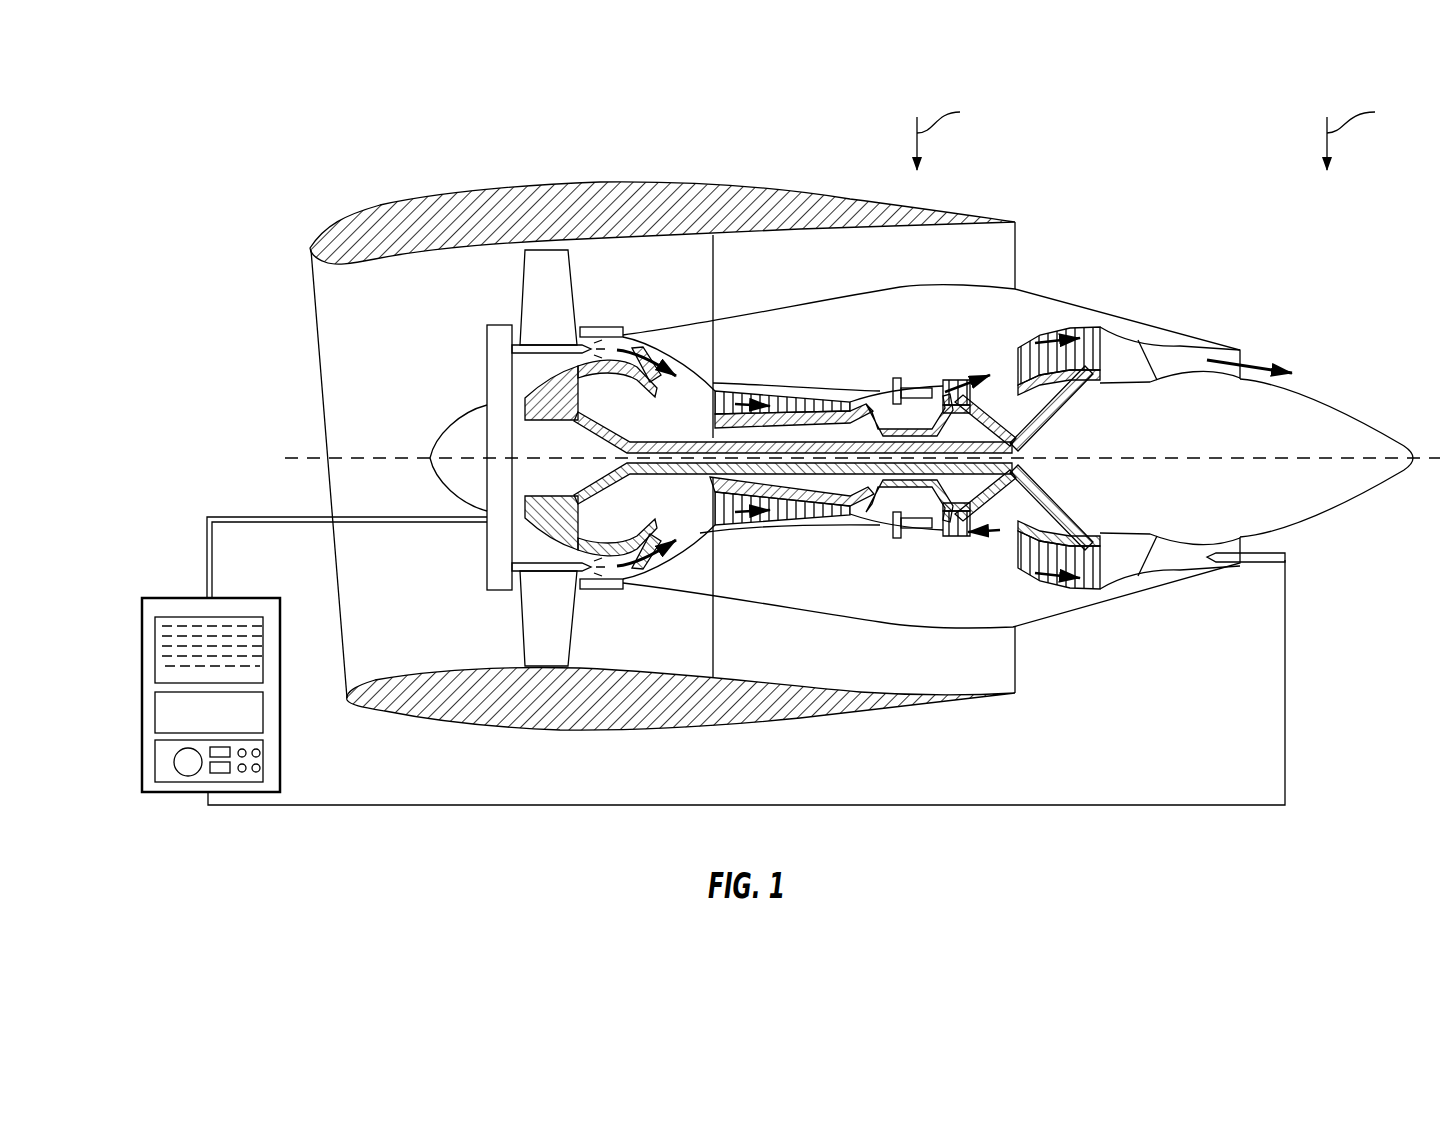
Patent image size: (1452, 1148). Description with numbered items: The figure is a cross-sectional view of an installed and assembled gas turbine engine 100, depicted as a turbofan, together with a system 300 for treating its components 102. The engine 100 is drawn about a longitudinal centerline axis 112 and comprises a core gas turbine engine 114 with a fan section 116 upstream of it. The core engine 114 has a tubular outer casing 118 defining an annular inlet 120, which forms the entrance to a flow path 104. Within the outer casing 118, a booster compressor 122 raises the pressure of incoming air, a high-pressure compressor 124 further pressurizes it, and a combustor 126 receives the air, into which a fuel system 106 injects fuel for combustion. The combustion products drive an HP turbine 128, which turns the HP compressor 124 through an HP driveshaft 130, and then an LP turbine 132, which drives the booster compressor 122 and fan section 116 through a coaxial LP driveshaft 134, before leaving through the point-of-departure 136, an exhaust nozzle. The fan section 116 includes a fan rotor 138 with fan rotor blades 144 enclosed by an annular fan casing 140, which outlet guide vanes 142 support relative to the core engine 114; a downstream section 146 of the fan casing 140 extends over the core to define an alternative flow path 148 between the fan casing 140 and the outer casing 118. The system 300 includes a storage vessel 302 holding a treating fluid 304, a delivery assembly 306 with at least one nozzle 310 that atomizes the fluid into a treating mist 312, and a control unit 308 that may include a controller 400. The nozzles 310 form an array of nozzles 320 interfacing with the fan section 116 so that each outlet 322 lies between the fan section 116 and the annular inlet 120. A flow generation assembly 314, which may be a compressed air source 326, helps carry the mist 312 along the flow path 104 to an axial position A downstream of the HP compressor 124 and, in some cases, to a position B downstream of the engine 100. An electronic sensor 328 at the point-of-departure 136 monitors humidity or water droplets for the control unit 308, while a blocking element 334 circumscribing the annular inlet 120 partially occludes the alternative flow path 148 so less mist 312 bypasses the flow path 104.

The installed and assembled gas turbine engine 100 is at (1120, 207).
The component 102 is at (1100, 277).
The flow path 104 is at (730, 390).
The fuel system 106 is at (897, 520).
The centerline axis 112 is at (1160, 452).
The core gas turbine engine 114 is at (870, 340).
The fan section 116 is at (567, 176).
The outer casing 118 is at (863, 620).
The annular inlet 120 is at (636, 320).
The booster compressor 122 is at (660, 548).
The high-pressure compressor 124 is at (745, 518).
The combustor 126 is at (917, 522).
The HP turbine 128 is at (1045, 508).
The HP driveshaft 130 is at (945, 418).
The LP turbine 132 is at (1088, 580).
The LP driveshaft 134 is at (678, 433).
The point-of-departure 136 is at (1245, 358).
The fan rotor 138 is at (533, 500).
The fan casing 140 is at (560, 732).
The outlet guide vanes 142 is at (713, 273).
The fan rotor blades 144 is at (525, 652).
The downstream section 146 is at (957, 212).
The alternative flow path 148 is at (879, 277).
The system 300 is at (751, 630).
The storage vessel 302 is at (249, 704).
The treating fluid 304 is at (183, 628).
The delivery assembly 306 is at (460, 392).
The control unit 308 is at (194, 807).
The nozzle 310 is at (585, 343).
The treating mist 312 is at (626, 323).
The flow generation assembly 314 is at (264, 737).
The array of nozzles 320 is at (432, 548).
The outlet 322 is at (587, 588).
The compressed air source 326 is at (253, 708).
The electronic sensor 328 is at (1279, 553).
The blocking element 334 is at (612, 341).
The controller 400 is at (168, 775).
The axial position downstream of the HP compressor A is at (949, 132).
The axial position downstream of the engine B is at (1360, 132).